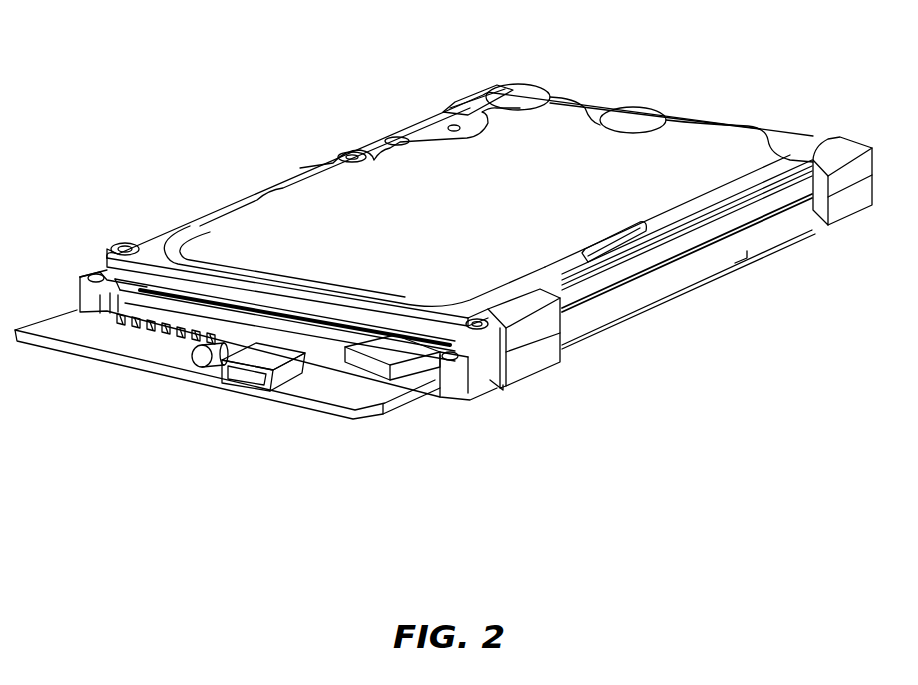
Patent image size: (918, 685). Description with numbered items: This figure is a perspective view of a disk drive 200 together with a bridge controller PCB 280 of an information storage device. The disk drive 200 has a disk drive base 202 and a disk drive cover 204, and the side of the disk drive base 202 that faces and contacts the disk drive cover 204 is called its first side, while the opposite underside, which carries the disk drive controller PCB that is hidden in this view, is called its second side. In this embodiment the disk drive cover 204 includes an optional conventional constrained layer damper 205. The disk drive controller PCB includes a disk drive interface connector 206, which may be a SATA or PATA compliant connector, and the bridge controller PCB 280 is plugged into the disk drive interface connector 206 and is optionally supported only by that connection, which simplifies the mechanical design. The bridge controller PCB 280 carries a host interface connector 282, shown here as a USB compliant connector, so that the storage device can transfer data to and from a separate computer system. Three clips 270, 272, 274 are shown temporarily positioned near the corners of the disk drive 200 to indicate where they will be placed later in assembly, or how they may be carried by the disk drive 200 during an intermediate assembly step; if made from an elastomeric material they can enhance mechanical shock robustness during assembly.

The disk drive 200 is at (632, 63).
The disk drive base 202 is at (745, 243).
The disk drive cover 204 is at (652, 227).
The constrained layer damper 205 is at (250, 222).
The disk drive interface connector 206 is at (158, 293).
The clip 270 is at (530, 355).
The clip 272 is at (842, 153).
The clip 274 is at (481, 97).
The bridge controller PCB 280 is at (103, 337).
The host interface connector 282 is at (283, 370).